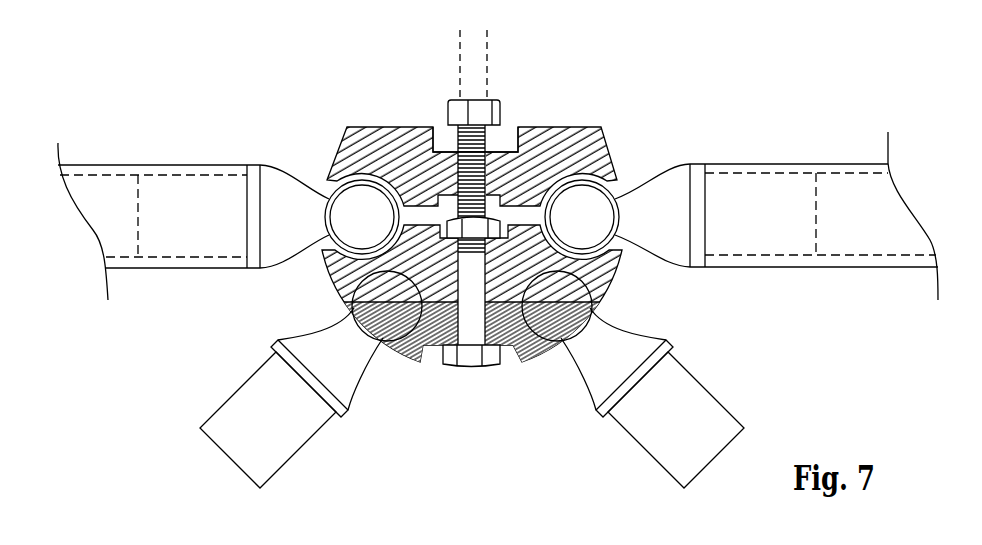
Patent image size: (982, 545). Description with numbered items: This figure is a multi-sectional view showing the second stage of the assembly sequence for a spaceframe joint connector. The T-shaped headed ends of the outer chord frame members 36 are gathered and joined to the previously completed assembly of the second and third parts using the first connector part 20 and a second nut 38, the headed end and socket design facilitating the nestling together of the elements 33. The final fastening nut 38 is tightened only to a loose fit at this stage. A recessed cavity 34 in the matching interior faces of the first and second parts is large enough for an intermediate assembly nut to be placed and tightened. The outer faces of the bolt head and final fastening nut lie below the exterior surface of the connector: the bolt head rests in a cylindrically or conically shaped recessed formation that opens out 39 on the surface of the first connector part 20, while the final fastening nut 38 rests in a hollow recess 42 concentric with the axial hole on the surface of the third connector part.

The first connector part 20 is at (335, 142).
The nestling of elements 33 is at (621, 187).
The recessed cavity 34 is at (501, 209).
The outer chord frame member 36 is at (697, 273).
The second nut (final fastening nut) 38 is at (470, 117).
The recessed formation opening 39 is at (503, 357).
The hollow recess 42 is at (507, 144).